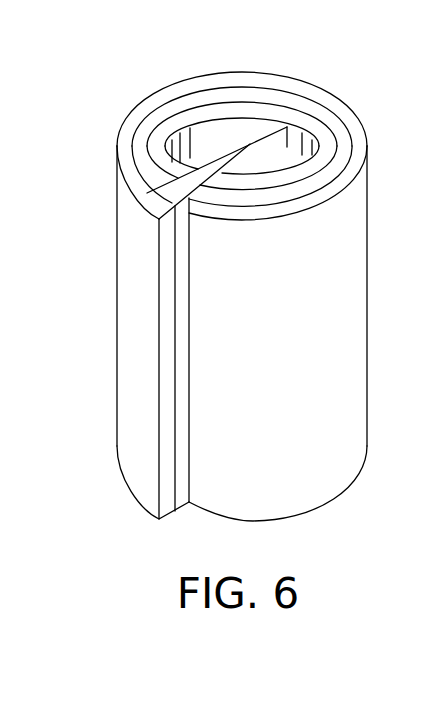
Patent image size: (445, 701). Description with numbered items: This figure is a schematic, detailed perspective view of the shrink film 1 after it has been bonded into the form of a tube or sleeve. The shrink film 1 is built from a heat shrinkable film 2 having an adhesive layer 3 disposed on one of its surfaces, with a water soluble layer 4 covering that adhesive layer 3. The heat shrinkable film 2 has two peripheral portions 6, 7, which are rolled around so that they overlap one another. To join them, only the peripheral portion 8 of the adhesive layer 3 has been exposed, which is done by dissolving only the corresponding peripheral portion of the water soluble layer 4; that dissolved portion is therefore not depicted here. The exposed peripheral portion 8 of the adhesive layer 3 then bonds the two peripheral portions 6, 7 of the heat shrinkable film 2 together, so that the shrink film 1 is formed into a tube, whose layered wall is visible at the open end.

The shrink film 1 is at (78, 112).
The heat shrinkable film 2 is at (138, 120).
The adhesive layer 3 is at (166, 116).
The water soluble layer 4 is at (187, 128).
The peripheral portion 6 is at (193, 181).
The peripheral portion 7 is at (155, 336).
The peripheral portion of the adhesive layer 8 is at (171, 198).